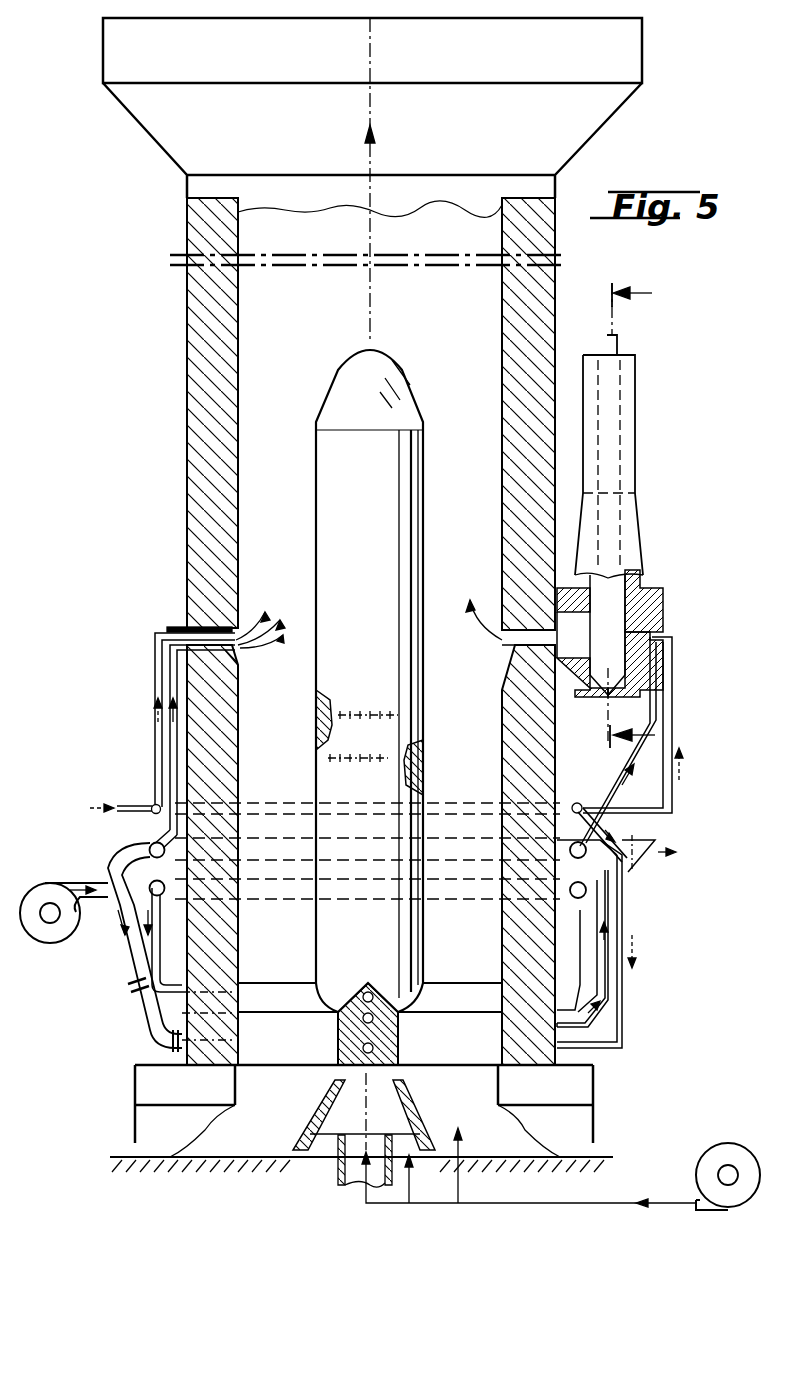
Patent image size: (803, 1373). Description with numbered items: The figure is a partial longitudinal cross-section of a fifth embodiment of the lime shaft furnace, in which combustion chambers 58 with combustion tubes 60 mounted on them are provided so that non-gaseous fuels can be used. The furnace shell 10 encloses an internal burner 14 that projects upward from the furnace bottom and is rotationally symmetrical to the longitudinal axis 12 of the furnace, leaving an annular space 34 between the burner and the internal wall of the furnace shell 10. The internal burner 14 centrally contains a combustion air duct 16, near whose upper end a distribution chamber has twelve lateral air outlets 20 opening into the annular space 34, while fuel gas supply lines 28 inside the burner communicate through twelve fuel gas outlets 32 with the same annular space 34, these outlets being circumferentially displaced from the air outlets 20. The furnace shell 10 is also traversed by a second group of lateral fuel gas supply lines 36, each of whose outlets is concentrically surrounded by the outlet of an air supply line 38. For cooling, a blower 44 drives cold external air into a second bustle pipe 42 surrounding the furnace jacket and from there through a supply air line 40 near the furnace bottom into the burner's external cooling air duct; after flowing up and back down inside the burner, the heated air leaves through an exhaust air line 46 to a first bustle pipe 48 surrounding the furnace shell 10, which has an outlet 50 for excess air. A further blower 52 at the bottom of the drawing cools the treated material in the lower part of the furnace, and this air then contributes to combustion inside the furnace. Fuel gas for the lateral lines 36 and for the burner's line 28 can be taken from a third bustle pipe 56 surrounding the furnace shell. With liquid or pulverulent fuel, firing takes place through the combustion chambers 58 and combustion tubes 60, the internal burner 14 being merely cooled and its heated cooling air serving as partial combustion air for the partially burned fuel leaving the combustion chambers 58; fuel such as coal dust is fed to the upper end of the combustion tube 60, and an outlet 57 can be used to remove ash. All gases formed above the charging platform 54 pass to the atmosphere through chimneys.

The furnace shell 10 is at (556, 322).
The longitudinal axis 12 is at (372, 298).
The internal burner 14 is at (337, 380).
The combustion air duct 16 is at (128, 960).
The air outlets 20 is at (316, 727).
The fuel gas supply lines 28 is at (625, 908).
The fuel gas outlets 32 is at (420, 770).
The annular space 34 is at (253, 577).
The lateral fuel gas supply lines 36 is at (205, 622).
The air supply line 38 is at (200, 650).
The supply air line 40 is at (582, 912).
The second bustle pipe 42 is at (151, 882).
The blower 44 is at (48, 932).
The exhaust air line 46 is at (606, 980).
The first bustle pipe 48 is at (152, 843).
The outlet for excess air 50 is at (642, 845).
The blower 52 is at (713, 1160).
The charging platform 54 is at (614, 118).
The third bustle pipe 56 is at (583, 800).
The outlet 57 is at (612, 688).
The combustion chamber 58 is at (618, 610).
The combustion tube 60 is at (627, 420).